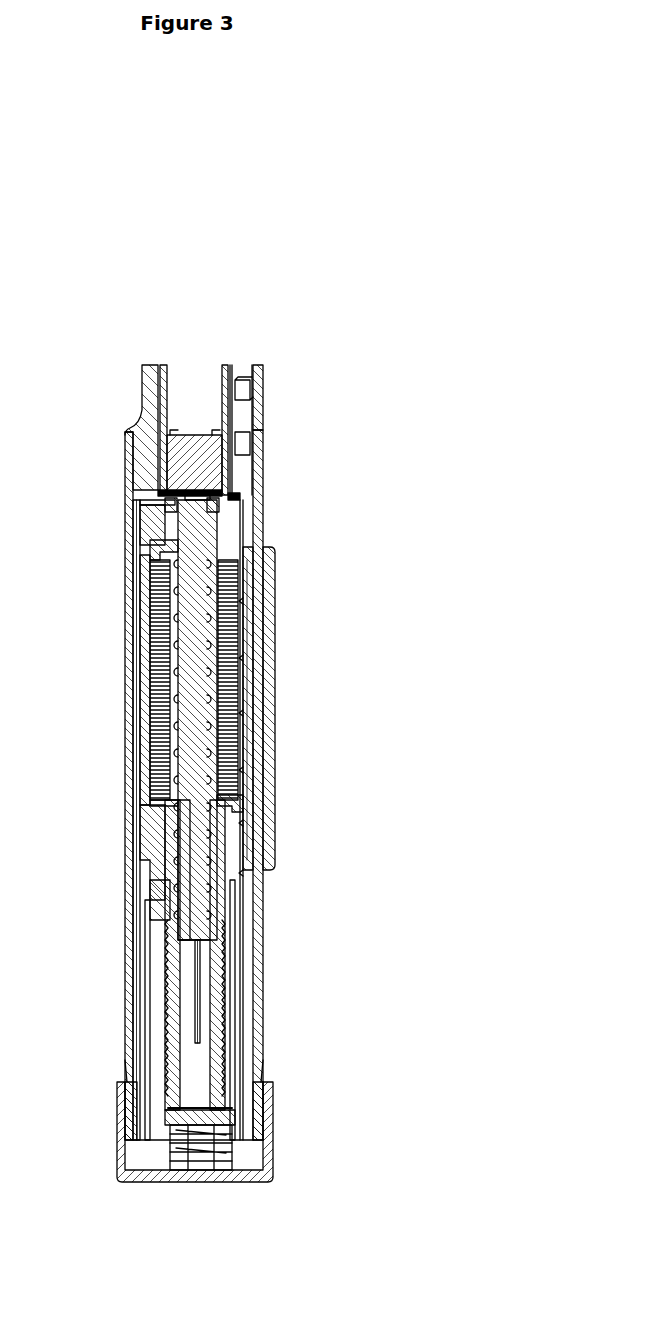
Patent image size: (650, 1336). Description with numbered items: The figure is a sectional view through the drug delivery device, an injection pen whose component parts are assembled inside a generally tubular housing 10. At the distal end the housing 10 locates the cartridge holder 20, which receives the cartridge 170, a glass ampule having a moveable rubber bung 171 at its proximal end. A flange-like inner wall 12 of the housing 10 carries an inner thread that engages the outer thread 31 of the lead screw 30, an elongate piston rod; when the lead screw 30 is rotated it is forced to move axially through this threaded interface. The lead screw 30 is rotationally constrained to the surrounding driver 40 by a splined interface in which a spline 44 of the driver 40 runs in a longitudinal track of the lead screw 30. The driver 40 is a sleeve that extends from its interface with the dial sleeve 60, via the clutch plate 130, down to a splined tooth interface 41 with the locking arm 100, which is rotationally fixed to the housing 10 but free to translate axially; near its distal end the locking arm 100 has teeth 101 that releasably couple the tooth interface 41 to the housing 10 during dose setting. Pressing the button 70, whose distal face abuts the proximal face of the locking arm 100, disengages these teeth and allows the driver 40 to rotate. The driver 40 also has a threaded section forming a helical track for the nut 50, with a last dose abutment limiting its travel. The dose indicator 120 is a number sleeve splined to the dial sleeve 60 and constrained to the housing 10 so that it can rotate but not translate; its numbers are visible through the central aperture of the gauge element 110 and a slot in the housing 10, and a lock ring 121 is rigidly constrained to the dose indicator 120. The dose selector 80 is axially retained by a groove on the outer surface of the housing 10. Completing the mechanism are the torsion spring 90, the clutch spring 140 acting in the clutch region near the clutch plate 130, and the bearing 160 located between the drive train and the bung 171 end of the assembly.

The housing 10 is at (128, 998).
The inner wall 12 is at (238, 493).
The cartridge holder 20 is at (145, 425).
The lead screw 30 is at (200, 740).
The outer thread 31 is at (180, 820).
The driver 40 is at (222, 1048).
The splined tooth interface 41 is at (164, 548).
The spline 44 is at (198, 970).
The nut 50 is at (160, 897).
The dial sleeve 60 is at (150, 863).
The button 70 is at (245, 1180).
The dose selector 80 is at (125, 1130).
The torsion spring 90 is at (235, 630).
The locking arm 100 is at (135, 738).
The teeth 101 is at (160, 520).
The gauge element 110 is at (250, 768).
The dose indicator 120 is at (147, 655).
The lock ring 121 is at (235, 797).
The clutch plate 130 is at (193, 1120).
The clutch spring 140 is at (172, 1150).
The bearing 160 is at (168, 493).
The cartridge 170 is at (163, 385).
The rubber bung 171 is at (197, 440).